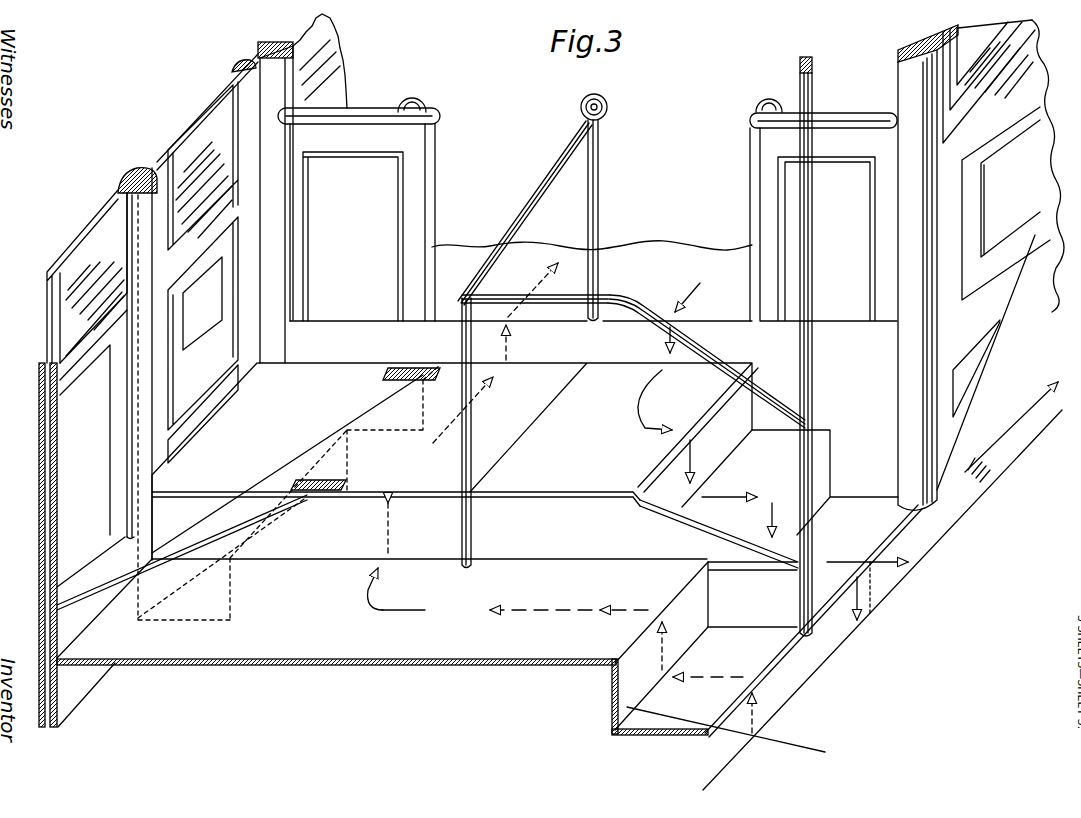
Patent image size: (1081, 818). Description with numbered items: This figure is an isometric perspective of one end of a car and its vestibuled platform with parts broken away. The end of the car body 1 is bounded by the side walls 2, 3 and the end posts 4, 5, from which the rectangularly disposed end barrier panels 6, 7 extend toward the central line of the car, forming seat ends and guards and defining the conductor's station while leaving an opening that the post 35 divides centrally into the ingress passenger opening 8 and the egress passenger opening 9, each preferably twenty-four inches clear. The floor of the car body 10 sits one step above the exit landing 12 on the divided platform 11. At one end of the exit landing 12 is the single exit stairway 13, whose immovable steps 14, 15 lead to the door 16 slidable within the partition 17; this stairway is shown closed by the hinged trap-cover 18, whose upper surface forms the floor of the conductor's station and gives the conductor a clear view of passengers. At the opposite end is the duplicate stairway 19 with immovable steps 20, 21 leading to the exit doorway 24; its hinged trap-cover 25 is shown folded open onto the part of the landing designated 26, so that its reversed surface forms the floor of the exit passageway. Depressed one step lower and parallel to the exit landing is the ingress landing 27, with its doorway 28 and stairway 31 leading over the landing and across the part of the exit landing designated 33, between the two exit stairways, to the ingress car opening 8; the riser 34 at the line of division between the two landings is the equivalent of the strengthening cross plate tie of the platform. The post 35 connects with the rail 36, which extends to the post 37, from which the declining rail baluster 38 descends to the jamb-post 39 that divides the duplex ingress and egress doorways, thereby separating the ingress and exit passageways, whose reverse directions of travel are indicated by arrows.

The end of the car body 1 is at (983, 310).
The side wall 2 is at (318, 74).
The side wall 3 is at (1010, 183).
The end post 4 is at (258, 56).
The end post 5 is at (898, 58).
The end barrier panel 6 is at (375, 186).
The end barrier panel 7 is at (795, 167).
The ingress passenger opening 8 is at (495, 190).
The egress passenger opening 9 is at (643, 198).
The floor of the car body 10 is at (660, 255).
The divided platform 11 is at (302, 667).
The exit landing 12 is at (498, 398).
The exit stairway 13 is at (152, 512).
The immovable step 14 is at (177, 526).
The immovable step 15 is at (150, 533).
The door 16 is at (220, 160).
The partition 17 is at (105, 265).
The hinged trap-cover 18 is at (289, 407).
The stairway 19 is at (827, 562).
The immovable step 20 is at (769, 499).
The immovable step 21 is at (808, 570).
The exit doorway 24 is at (895, 533).
The hinged trap-cover 25 is at (508, 387).
The part of the landing 26 is at (429, 461).
The ingress landing 27 is at (508, 601).
The doorway 28 is at (752, 693).
The stairway 31 is at (738, 734).
The part of the landing 33 is at (424, 376).
The riser 34 is at (413, 528).
The post 35 is at (598, 185).
The rail 36 is at (520, 228).
The post 37 is at (468, 350).
The declining rail baluster 38 is at (702, 352).
The jamb-post 39 is at (815, 414).